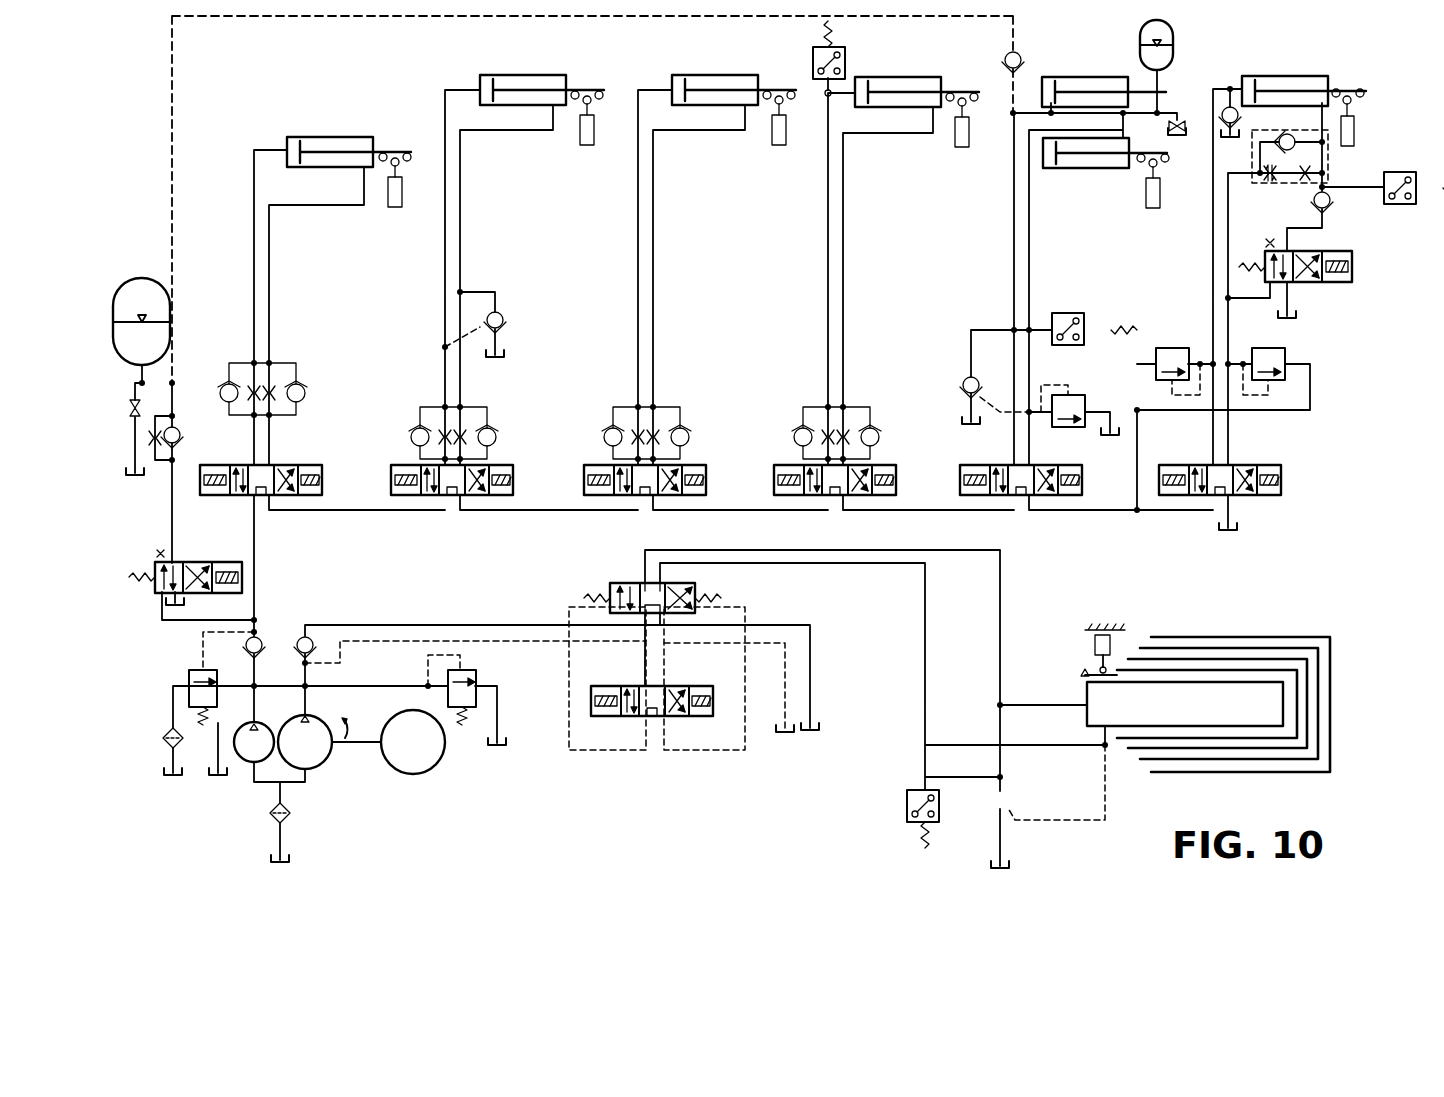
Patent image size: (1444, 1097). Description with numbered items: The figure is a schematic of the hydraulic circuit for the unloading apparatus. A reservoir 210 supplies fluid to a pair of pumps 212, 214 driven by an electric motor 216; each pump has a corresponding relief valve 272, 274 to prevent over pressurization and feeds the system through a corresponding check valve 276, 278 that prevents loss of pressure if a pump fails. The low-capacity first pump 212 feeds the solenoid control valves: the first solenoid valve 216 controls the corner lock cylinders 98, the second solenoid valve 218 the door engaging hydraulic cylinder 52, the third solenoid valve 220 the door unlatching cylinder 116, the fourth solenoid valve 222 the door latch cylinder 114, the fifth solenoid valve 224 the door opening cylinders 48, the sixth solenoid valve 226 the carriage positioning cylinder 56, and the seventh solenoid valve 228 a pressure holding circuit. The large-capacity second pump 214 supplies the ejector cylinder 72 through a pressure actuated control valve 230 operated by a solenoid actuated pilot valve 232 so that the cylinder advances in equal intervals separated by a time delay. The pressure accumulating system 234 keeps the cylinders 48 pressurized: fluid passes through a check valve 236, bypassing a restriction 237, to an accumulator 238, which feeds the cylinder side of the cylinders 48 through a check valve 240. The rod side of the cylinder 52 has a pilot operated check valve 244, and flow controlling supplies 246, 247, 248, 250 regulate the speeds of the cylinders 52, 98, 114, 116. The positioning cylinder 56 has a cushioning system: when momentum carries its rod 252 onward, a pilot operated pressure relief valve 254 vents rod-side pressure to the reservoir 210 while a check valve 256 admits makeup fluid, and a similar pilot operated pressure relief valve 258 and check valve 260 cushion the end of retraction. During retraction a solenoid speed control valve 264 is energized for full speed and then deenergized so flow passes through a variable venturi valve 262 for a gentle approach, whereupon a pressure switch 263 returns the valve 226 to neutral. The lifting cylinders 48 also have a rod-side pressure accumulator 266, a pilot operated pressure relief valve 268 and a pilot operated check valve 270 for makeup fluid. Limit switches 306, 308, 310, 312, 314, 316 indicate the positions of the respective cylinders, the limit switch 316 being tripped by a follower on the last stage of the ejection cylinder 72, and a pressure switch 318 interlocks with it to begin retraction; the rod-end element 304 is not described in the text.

The door opening cylinders 48 is at (1092, 77).
The door engaging hydraulic cylinder 52 is at (552, 75).
The carriage positioning cylinder 56 is at (1296, 76).
The ejector cylinder 72 is at (1207, 640).
The corner lock cylinders 98 is at (343, 170).
The door latch cylinder 114 is at (935, 77).
The door unlatching cylinder 116 is at (700, 75).
The reservoir 210 is at (1240, 531).
The first pump 212 is at (258, 722).
The second pump 214 is at (315, 756).
The electric motor 216 is at (294, 465).
The second solenoid valve 218 is at (497, 465).
The third solenoid valve 220 is at (694, 465).
The fourth solenoid valve 222 is at (880, 465).
The fifth solenoid valve 224 is at (1056, 465).
The sixth solenoid valve 226 is at (1262, 465).
The seventh solenoid valve 228 is at (196, 562).
The pressure actuated control valve 230 is at (688, 584).
The solenoid actuated pilot valve 232 is at (676, 686).
The pressure accumulating system 234 is at (180, 203).
The check valve 236 is at (182, 436).
The restriction 237 is at (150, 452).
The hydraulic accumulator 238 is at (125, 278).
The check valve 240 is at (1006, 56).
The pilot operated check valve 244 is at (500, 311).
The flow controlling supply 246 is at (462, 420).
The flow controlling supply 247 is at (272, 387).
The flow controlling supply 248 is at (842, 418).
The flow controlling supply 250 is at (665, 420).
The rod 252 is at (1357, 88).
The pilot operated pressure relief valve 254 is at (1283, 352).
The check valve 256 is at (1240, 117).
The pilot operated pressure relief valve 258 is at (1180, 348).
The check valve 260 is at (1331, 204).
The variable venturi valve 262 is at (1280, 185).
The pressure switch 263 is at (1399, 172).
The solenoid speed control valve 264 is at (1330, 251).
The pressure accumulator 266 is at (1173, 44).
The pilot operated pressure relief valve 268 is at (1070, 395).
The check valve 270 is at (963, 381).
The relief valve 272 is at (205, 670).
The relief valve 274 is at (478, 670).
The check valve 276 is at (262, 638).
The check valve 278 is at (309, 622).
The position sensor 304 is at (1354, 133).
The limit switch 306 is at (402, 190).
The limit switch 308 is at (582, 140).
The limit switch 310 is at (956, 142).
The limit switch 312 is at (773, 140).
The limit switch 314 is at (1160, 194).
The limit switch 316 is at (1094, 645).
The pressure switch 318 is at (906, 800).